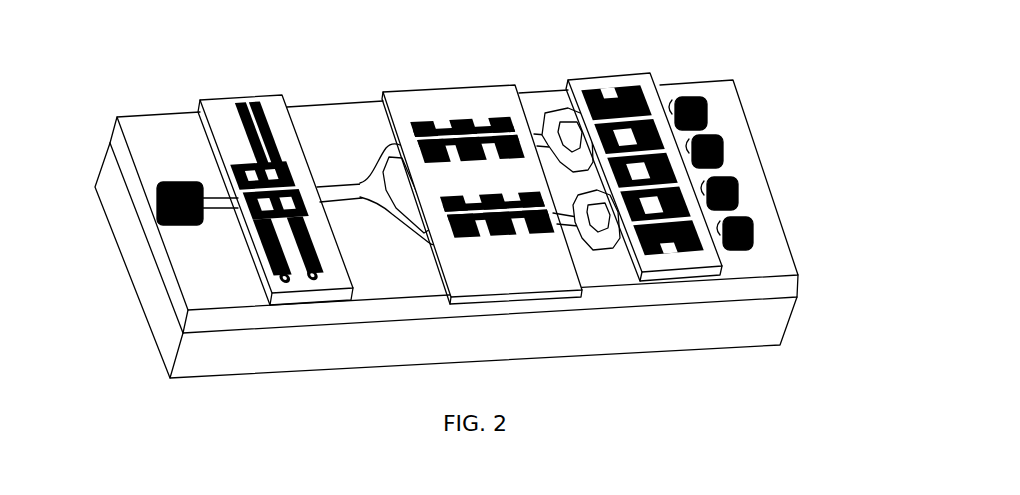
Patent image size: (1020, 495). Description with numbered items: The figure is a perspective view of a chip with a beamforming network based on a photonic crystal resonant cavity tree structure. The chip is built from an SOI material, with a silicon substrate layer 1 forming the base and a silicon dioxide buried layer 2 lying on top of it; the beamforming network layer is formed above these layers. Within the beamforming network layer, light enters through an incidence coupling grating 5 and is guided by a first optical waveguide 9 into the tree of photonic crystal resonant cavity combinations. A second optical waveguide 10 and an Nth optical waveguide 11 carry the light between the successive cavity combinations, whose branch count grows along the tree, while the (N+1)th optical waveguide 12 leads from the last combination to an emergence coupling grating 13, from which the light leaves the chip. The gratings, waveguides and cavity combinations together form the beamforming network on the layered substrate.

The silicon substrate layer 1 is at (782, 317).
The silicon dioxide buried layer 2 is at (780, 285).
The incidence coupling grating 5 is at (157, 203).
The first optical waveguide 9 is at (223, 198).
The second optical waveguide 10 is at (356, 183).
The Nth optical waveguide 11 is at (541, 138).
The (N+1)th optical waveguide 12 is at (672, 110).
The emergence coupling grating 13 is at (708, 114).